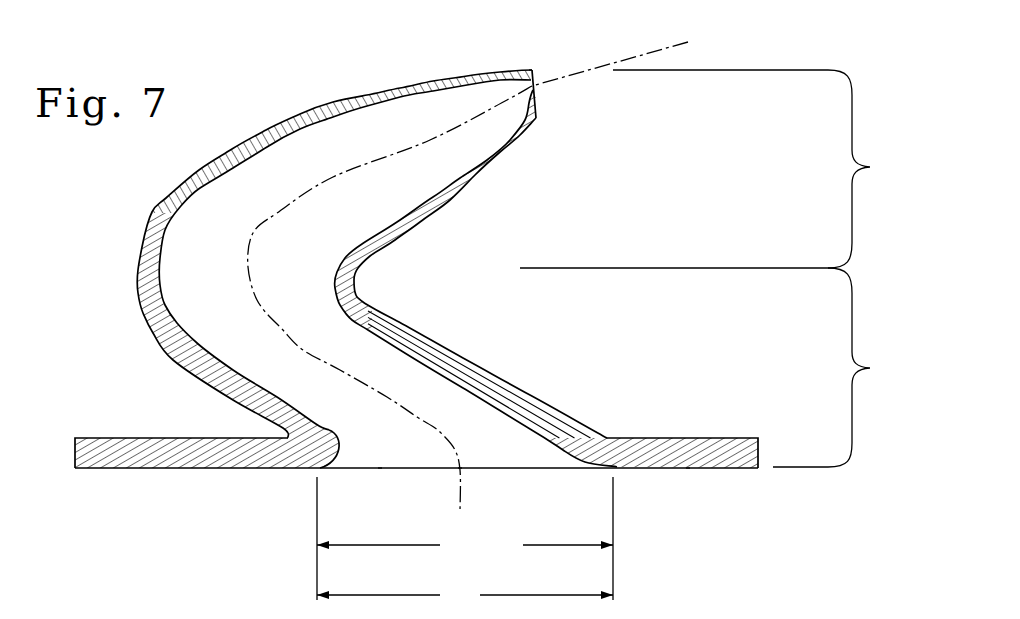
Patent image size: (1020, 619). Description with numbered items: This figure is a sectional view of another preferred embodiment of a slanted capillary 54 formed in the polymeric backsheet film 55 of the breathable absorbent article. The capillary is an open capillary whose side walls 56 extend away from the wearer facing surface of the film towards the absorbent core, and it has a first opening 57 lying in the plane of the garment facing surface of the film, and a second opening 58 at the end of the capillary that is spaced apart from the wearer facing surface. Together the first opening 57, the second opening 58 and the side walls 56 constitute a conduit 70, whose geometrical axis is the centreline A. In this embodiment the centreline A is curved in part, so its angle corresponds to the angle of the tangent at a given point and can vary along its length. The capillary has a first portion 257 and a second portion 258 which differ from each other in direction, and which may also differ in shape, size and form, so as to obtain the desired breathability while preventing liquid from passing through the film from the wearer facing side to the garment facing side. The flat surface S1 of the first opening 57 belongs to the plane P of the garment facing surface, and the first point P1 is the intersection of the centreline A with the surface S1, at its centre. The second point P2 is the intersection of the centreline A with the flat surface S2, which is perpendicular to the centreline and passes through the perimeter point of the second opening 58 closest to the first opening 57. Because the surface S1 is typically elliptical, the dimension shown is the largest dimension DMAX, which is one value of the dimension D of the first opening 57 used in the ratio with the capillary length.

The capillary 54 is at (288, 254).
The polymeric backsheet film 55 is at (195, 466).
The side walls 56 is at (157, 334).
The first opening 57 is at (517, 468).
The second opening 58 is at (536, 92).
The conduit 70 is at (264, 170).
The first portion 257 is at (854, 367).
The second portion 258 is at (726, 169).
The centreline A is at (633, 60).
The surface of the first opening S1 is at (380, 480).
The flat surface S2 is at (531, 70).
The first point P1 is at (458, 468).
The second point P2 is at (536, 98).
The plane P is at (696, 476).
The dimension of the first opening D is at (465, 597).
The largest dimension of the first opening DMAX is at (465, 538).